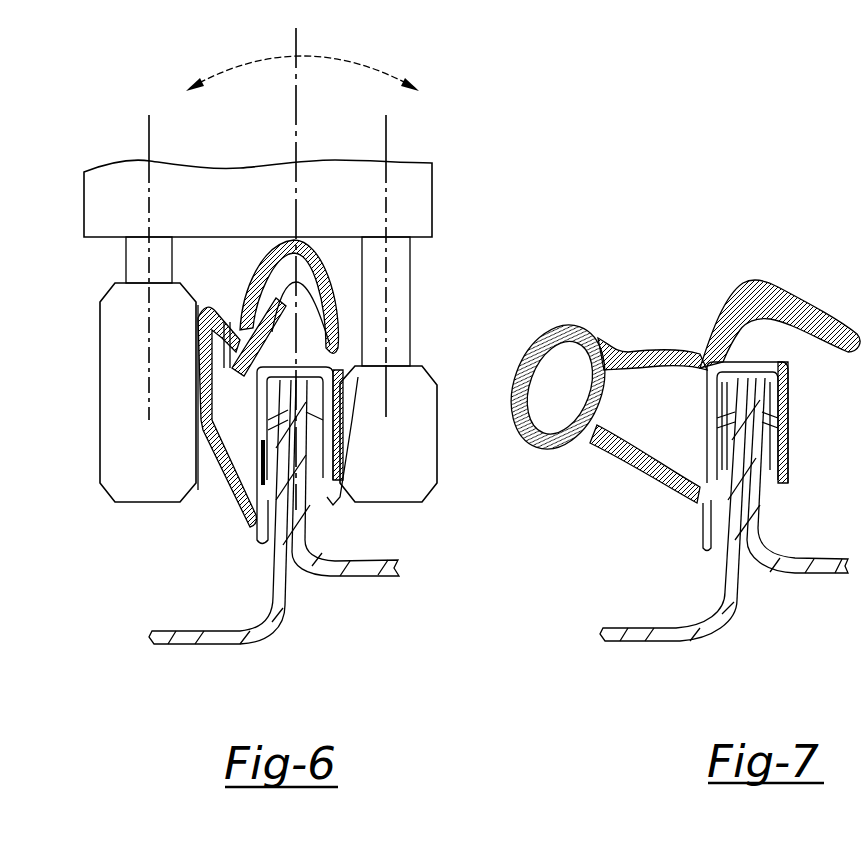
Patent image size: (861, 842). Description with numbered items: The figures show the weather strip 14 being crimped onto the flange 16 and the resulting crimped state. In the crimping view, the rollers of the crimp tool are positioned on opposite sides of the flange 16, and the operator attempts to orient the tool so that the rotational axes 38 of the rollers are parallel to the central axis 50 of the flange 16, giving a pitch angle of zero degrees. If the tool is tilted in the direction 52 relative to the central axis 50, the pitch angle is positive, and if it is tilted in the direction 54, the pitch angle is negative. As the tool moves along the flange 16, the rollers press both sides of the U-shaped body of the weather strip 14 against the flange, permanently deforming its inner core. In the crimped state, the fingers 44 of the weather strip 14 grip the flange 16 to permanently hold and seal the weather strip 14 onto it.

In FIG. 6, the weather strip 14 is at (260, 260).
In FIG. 7, the weather strip 14 is at (739, 276).
In FIG. 6, the flange 16 is at (274, 550).
In FIG. 7, the flange 16 is at (725, 557).
In FIG. 6, the rotational axes 38 is at (147, 137).
In FIG. 6, the fingers 44 is at (5, 537).
In FIG. 6, the central axis 50 is at (295, 135).
In FIG. 6, the direction 52 is at (221, 72).
In FIG. 6, the direction 54 is at (374, 71).